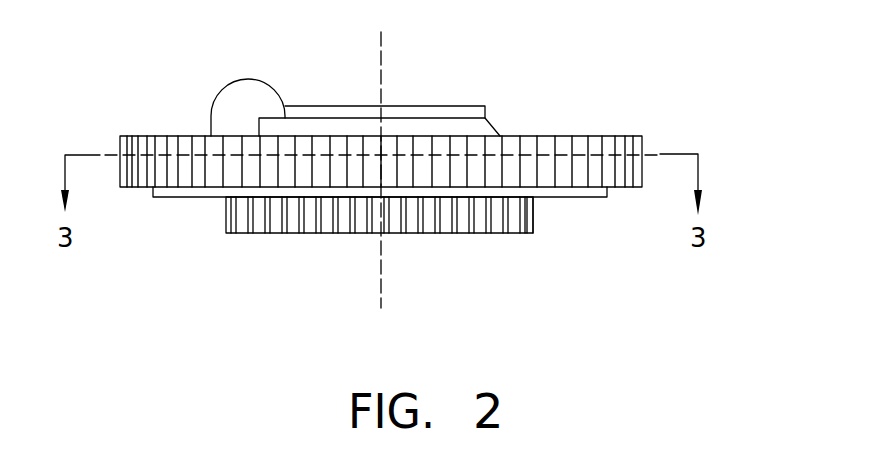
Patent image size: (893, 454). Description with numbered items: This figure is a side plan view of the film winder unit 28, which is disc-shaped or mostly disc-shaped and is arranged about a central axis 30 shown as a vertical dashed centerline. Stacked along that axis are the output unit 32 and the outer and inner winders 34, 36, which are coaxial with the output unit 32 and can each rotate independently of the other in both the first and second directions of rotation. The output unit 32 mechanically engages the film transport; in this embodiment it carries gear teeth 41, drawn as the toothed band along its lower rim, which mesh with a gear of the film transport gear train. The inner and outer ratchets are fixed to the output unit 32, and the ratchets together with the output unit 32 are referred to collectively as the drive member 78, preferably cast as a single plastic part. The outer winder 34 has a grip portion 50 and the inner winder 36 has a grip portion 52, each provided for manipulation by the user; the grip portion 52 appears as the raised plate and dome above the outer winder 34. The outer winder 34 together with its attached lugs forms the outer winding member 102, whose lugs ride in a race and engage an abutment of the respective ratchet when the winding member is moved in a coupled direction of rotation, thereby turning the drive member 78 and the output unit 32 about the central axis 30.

The film winder unit 28 is at (666, 258).
The central axis 30 is at (383, 52).
The output unit 32 is at (379, 248).
The outer winder 34 is at (468, 142).
The inner winder 36 is at (375, 90).
The gear teeth 41 is at (534, 218).
The grip portion 50 is at (468, 142).
The grip portion 52 is at (437, 106).
The drive member 78 is at (395, 234).
The outer winding member 102 is at (644, 146).